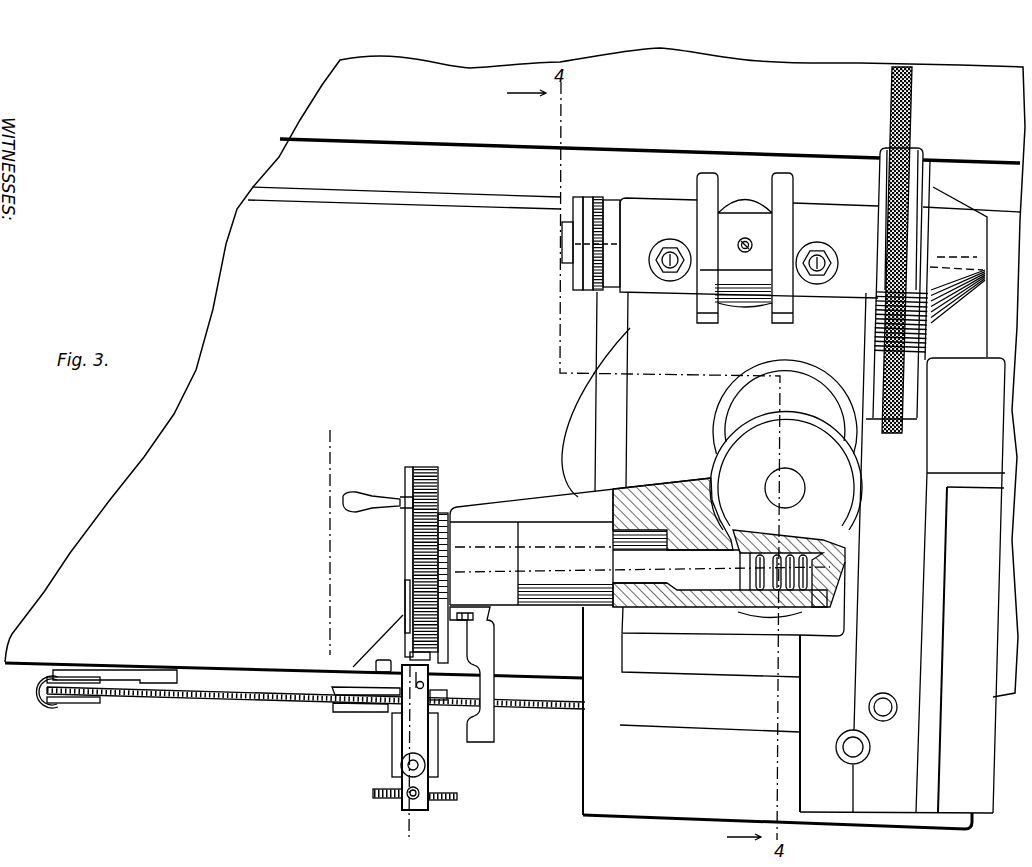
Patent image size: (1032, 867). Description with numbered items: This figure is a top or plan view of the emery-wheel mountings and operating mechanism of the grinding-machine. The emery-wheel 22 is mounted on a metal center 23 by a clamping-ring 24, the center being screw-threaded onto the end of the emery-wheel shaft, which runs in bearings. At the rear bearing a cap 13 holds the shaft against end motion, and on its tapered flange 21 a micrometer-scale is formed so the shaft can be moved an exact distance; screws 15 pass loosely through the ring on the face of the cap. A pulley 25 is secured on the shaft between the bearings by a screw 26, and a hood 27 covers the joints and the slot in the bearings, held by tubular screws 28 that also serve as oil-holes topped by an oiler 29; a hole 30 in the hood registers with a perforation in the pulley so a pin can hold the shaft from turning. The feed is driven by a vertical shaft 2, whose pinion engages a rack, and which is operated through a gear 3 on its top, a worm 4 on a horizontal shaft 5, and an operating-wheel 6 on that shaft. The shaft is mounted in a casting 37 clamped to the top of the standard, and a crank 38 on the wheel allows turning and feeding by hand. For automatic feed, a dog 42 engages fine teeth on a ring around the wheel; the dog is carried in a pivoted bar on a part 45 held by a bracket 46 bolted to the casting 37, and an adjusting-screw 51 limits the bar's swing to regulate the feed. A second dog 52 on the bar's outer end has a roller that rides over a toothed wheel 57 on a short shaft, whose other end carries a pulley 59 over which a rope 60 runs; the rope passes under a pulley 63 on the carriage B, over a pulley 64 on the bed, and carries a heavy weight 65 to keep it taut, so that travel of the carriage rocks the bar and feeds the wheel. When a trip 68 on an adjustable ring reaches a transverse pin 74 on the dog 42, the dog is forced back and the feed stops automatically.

The vertical shaft 2 is at (805, 488).
The gear 3 is at (803, 541).
The worm 4 is at (757, 601).
The horizontal shaft 5 is at (676, 566).
The operating-wheel 6 is at (421, 467).
The cap 13 is at (580, 199).
The screws 15 is at (378, 824).
The tapered flange 21 is at (597, 197).
The emery-wheel 22 is at (907, 128).
The metal center 23 is at (956, 260).
The clamping-ring 24 is at (912, 186).
The pulley 25 is at (747, 200).
The screw 26 is at (739, 261).
The hood 27 is at (749, 248).
The tubular screws 28 is at (661, 275).
The oiler 29 is at (660, 261).
The hole 30 is at (746, 247).
The casting 37 is at (557, 508).
The crank 38 is at (372, 486).
The dog 42 is at (433, 662).
The part 45 is at (397, 744).
The bracket 46 is at (450, 660).
The adjusting-screw 51 is at (424, 767).
The dog 52 is at (432, 806).
The toothed wheel 57 is at (373, 793).
The pulley 59 is at (388, 708).
The rope 60 is at (230, 700).
The pulley 63 is at (322, 718).
The pulley 64 is at (98, 709).
The weight 65 is at (53, 708).
The trip 68 is at (401, 605).
The transverse pin 74 is at (403, 650).
The carriage B is at (157, 658).